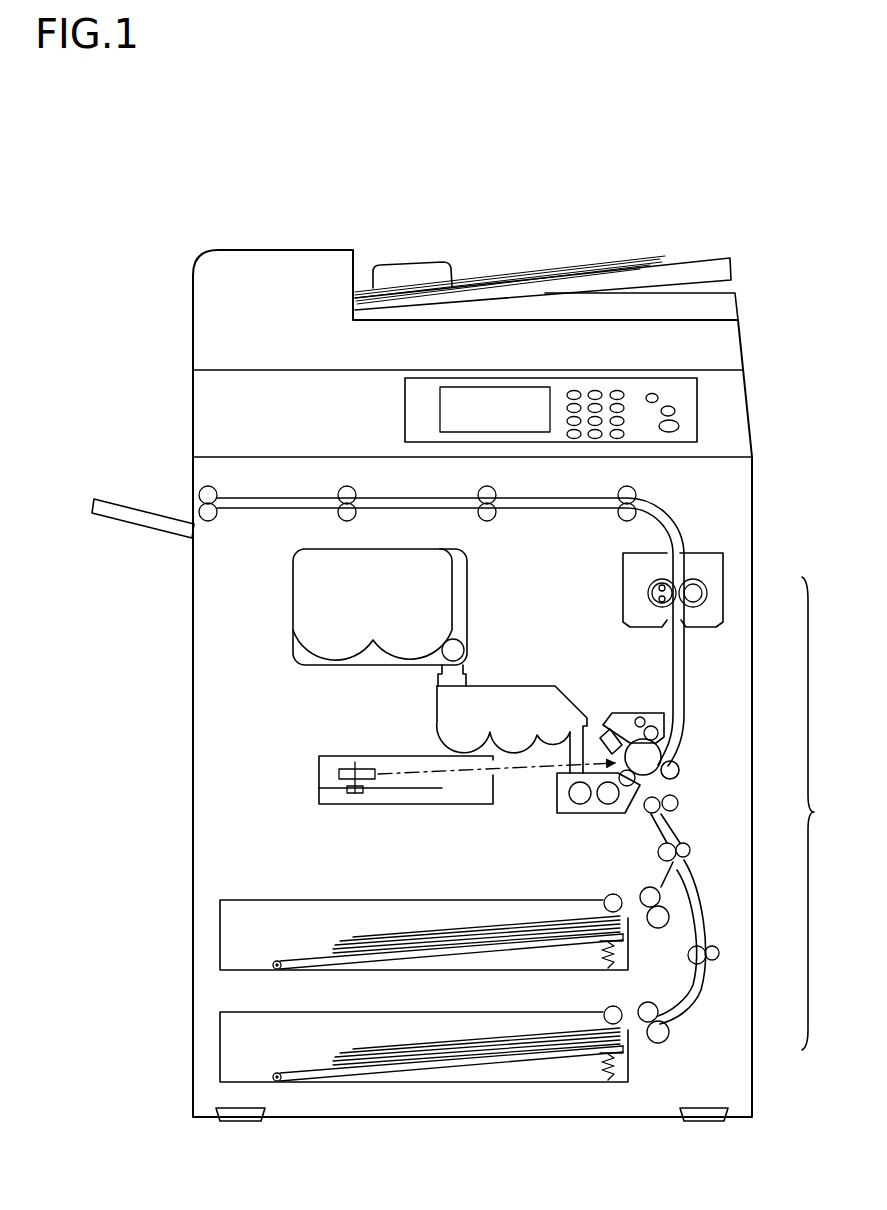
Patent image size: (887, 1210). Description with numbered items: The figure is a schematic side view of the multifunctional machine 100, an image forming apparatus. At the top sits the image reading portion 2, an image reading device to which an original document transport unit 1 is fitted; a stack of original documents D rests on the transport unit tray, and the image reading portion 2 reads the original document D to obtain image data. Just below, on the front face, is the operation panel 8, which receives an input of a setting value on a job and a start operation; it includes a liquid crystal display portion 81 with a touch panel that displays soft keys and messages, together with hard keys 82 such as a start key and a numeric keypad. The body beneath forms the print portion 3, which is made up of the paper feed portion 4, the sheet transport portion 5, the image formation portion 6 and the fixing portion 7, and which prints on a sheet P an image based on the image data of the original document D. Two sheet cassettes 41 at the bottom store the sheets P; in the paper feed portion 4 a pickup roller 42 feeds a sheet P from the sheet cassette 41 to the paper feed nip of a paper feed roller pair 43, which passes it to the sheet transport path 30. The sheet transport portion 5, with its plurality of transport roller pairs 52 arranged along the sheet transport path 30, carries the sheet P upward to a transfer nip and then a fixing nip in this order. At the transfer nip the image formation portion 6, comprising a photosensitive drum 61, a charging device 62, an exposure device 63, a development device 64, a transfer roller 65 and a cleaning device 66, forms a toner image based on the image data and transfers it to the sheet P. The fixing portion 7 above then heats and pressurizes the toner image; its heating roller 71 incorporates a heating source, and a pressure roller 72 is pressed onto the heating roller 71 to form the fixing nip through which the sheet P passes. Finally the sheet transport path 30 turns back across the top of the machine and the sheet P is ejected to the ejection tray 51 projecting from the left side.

The multifunctional machine 100 is at (195, 243).
The original document transport unit 1 is at (191, 321).
The image reading portion 2 is at (191, 421).
The print portion 3 is at (817, 813).
The paper feed portion 4 is at (505, 964).
The sheet transport portion 5 is at (722, 951).
The image formation portion 6 is at (528, 691).
The fixing portion 7 is at (682, 567).
The operation panel 8 is at (529, 389).
The liquid crystal display portion 81 is at (505, 397).
The hard keys 82 is at (597, 392).
The original document D is at (541, 268).
The sheet P is at (340, 936).
The sheet transport path 30 is at (545, 512).
The sheet cassette 41 is at (265, 899).
The pickup roller 42 is at (616, 893).
The paper feed roller pair 43 is at (655, 930).
The ejection tray 51 is at (145, 523).
The transport roller pairs 52 is at (217, 516).
The photosensitive drum 61 is at (636, 745).
The charging device 62 is at (604, 735).
The exposure device 63 is at (319, 773).
The development device 64 is at (557, 790).
The transfer roller 65 is at (681, 772).
The cleaning device 66 is at (650, 712).
The heating roller 71 is at (648, 594).
The pressure roller 72 is at (696, 579).